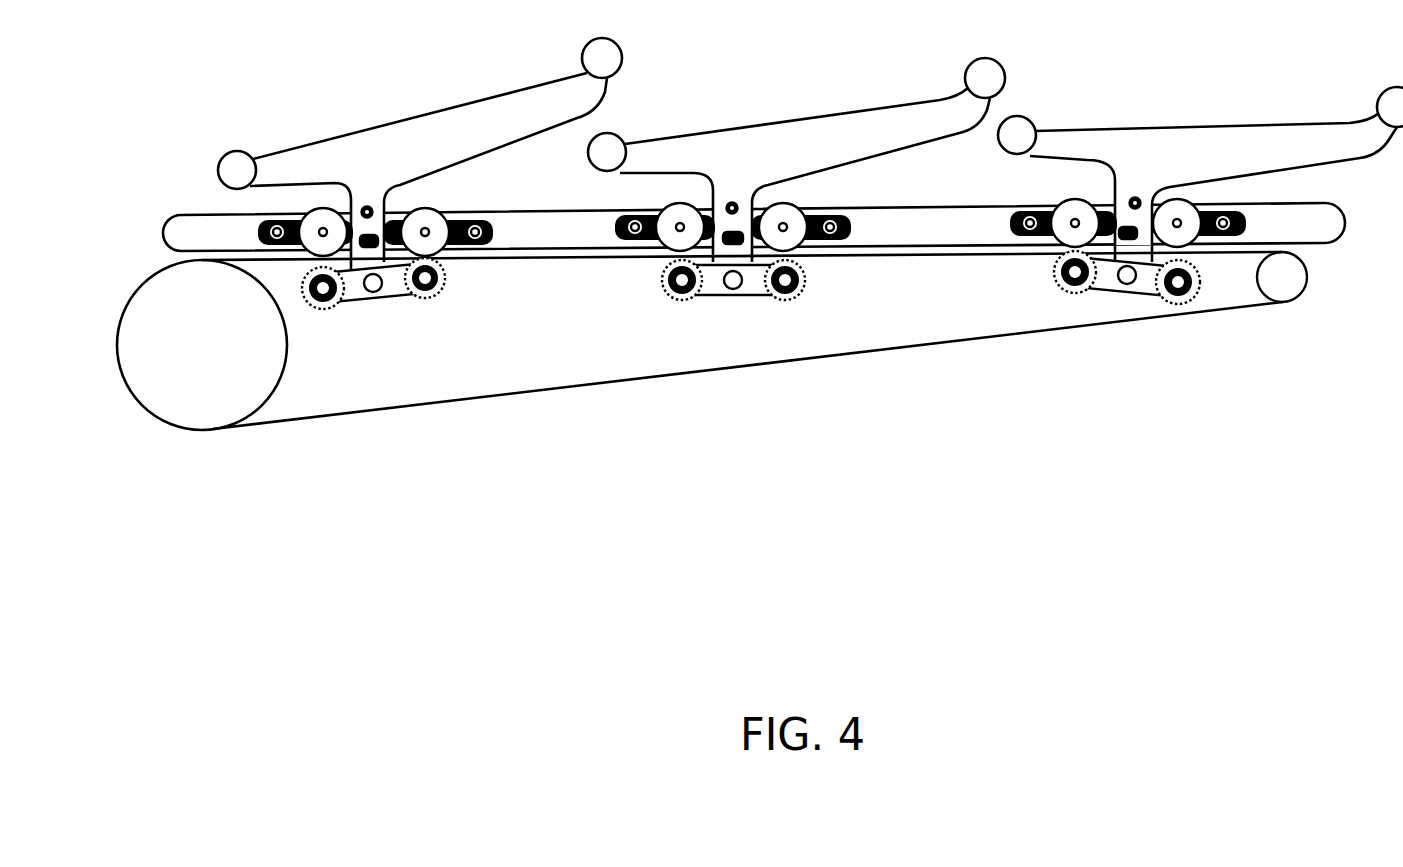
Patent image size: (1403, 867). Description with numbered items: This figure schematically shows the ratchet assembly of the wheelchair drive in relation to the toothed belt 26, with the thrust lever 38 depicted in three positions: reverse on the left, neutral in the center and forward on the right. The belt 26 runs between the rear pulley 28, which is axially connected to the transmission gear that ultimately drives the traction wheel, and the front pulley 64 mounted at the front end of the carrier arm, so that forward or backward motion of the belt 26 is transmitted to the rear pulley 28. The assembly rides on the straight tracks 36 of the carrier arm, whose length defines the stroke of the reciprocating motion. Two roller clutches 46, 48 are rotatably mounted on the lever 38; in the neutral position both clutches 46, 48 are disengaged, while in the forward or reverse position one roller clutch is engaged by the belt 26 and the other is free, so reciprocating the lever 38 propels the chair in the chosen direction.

The toothed belt 26 is at (893, 347).
The rear pulley 28 is at (136, 300).
The straight tracks 36 is at (1307, 223).
The thrust lever 38 is at (430, 138).
The roller clutch 46 is at (320, 310).
The roller clutch 48 is at (428, 299).
The front pulley 64 is at (1282, 284).